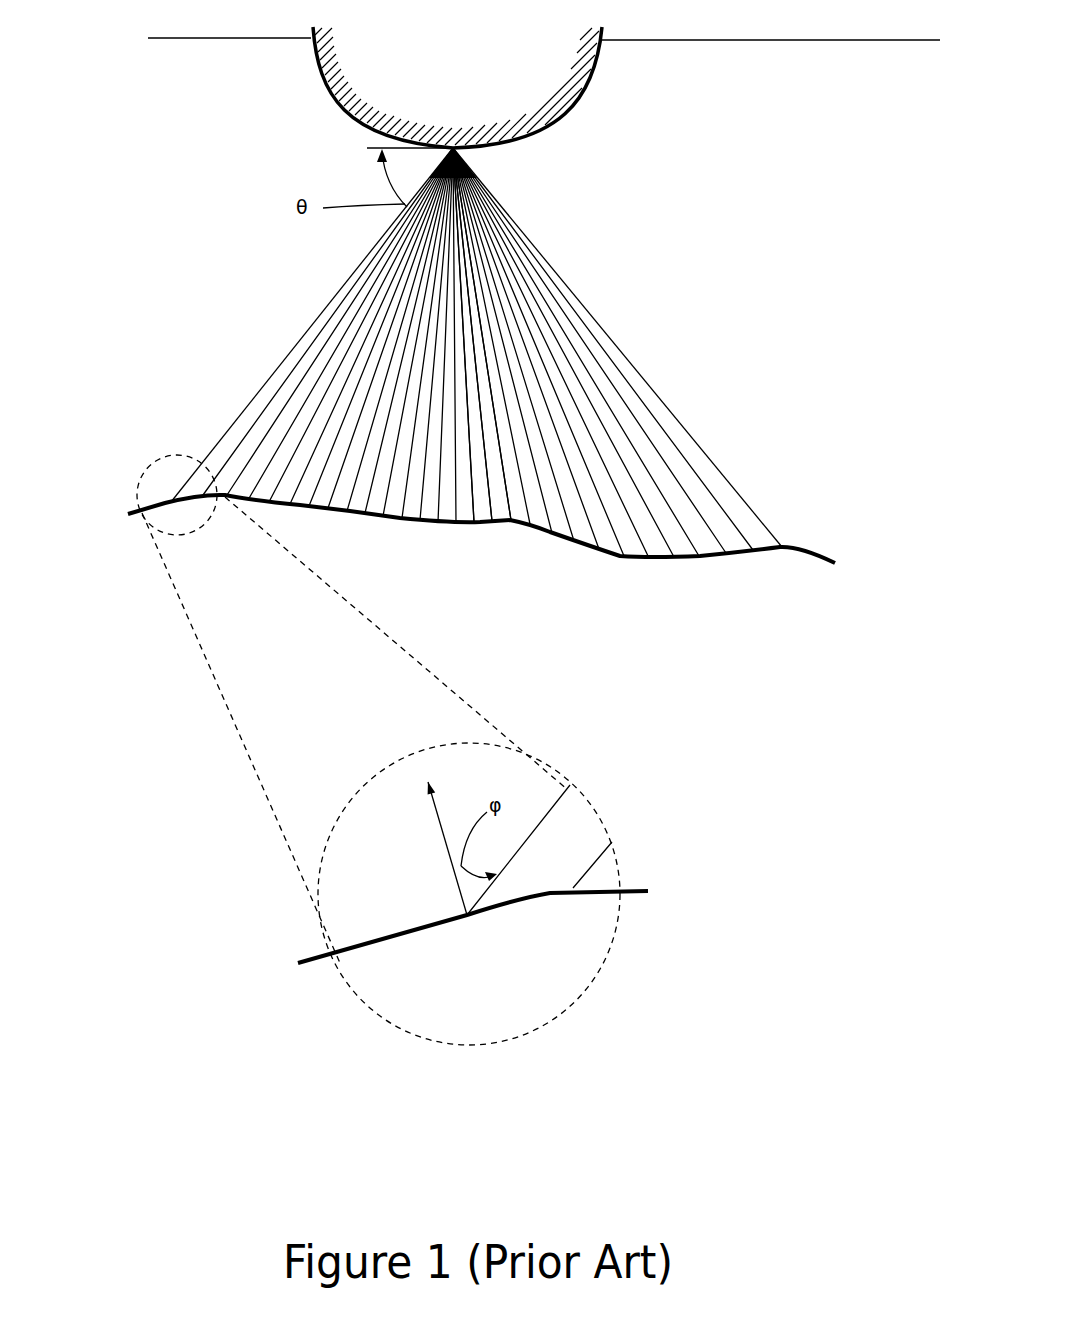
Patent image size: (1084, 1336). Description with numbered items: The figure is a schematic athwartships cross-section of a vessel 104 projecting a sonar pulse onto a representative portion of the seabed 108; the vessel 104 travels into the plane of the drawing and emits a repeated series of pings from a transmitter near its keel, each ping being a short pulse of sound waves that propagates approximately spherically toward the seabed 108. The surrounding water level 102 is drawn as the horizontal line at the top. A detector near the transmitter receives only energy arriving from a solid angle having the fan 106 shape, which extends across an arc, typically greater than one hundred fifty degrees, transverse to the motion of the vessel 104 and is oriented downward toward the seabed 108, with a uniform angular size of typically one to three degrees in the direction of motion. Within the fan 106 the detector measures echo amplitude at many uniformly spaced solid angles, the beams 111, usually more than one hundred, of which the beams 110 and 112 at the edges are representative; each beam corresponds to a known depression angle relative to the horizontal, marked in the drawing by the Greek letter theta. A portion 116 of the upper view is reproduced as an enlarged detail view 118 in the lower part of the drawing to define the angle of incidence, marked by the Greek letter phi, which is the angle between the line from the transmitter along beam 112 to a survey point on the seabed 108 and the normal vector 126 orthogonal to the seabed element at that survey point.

The water level 102 is at (870, 46).
The vessel 104 is at (577, 108).
The fan 106 is at (478, 270).
The seabed 108 is at (803, 538).
The beam 110 is at (620, 348).
The beams 111 is at (535, 342).
The beam 112 is at (298, 342).
The portion 116 is at (150, 468).
The enlarged detail view 118 is at (365, 1003).
The normal vector 126 is at (440, 838).